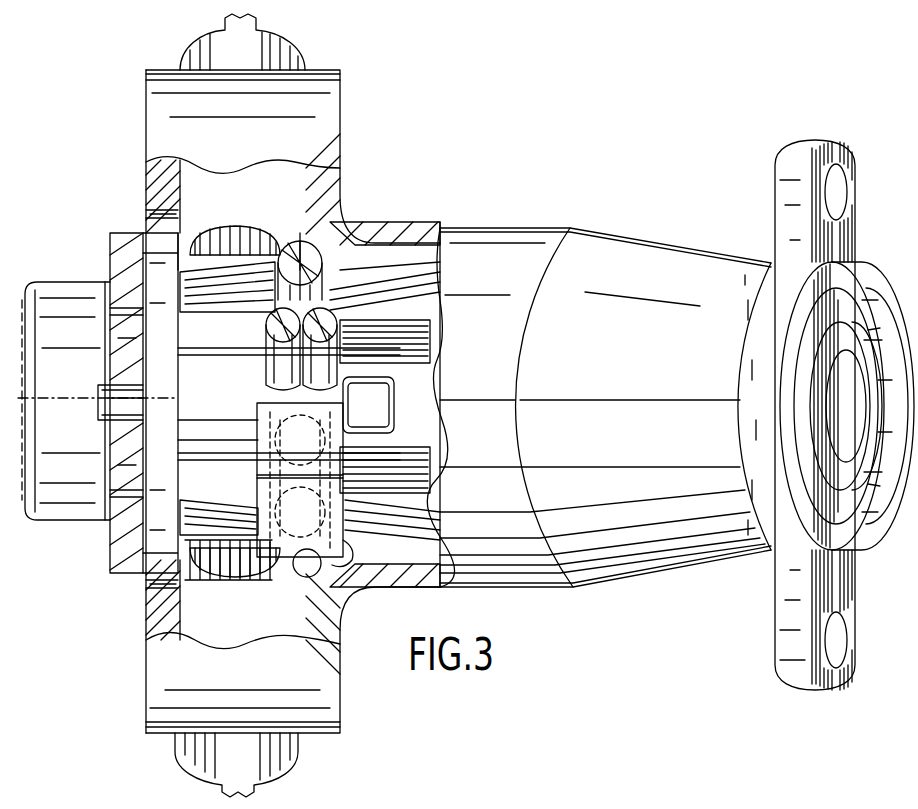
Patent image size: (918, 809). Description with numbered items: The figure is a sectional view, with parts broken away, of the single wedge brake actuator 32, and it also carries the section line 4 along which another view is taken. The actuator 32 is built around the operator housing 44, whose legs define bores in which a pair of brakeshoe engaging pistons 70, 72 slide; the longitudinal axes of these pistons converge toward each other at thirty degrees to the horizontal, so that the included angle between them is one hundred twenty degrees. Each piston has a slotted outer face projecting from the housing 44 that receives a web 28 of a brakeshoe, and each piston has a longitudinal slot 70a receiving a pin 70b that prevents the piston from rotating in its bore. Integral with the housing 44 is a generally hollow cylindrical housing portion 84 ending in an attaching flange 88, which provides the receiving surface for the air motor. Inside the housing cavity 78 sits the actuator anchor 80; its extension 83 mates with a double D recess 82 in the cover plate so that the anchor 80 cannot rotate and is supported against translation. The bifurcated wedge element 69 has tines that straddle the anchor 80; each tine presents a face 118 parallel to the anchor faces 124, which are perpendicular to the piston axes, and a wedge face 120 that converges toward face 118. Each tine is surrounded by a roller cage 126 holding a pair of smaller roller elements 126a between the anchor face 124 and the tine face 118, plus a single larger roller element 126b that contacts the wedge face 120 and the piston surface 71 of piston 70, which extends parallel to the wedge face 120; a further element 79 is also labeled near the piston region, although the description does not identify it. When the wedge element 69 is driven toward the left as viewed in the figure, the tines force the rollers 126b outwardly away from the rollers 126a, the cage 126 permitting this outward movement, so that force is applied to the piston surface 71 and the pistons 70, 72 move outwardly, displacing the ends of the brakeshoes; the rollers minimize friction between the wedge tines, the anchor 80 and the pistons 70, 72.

The section line 4- 4 is at (22, 70).
The web 28 is at (232, 48).
The actuator 32 is at (540, 204).
The operator housing 44 is at (383, 232).
The wedge element 69 is at (425, 245).
The piston 70 is at (185, 752).
The longitudinal slot 70a is at (192, 228).
The pin 70b is at (148, 214).
The piston surface 71 is at (215, 512).
The piston 72 is at (302, 70).
The cavity 78 is at (178, 322).
The gear 79 is at (212, 312).
The actuator anchor 80 is at (152, 436).
The double D recess 82 is at (140, 390).
The extension 83 is at (102, 390).
The cylindrical housing portion 84 is at (584, 236).
The attaching flange 88 is at (782, 170).
The tine face 118 is at (394, 372).
The wedge face 120 is at (362, 290).
The anchor face 124 is at (180, 348).
The roller cage 126 is at (352, 545).
The roller element 126a is at (330, 318).
The roller element 126b is at (325, 270).